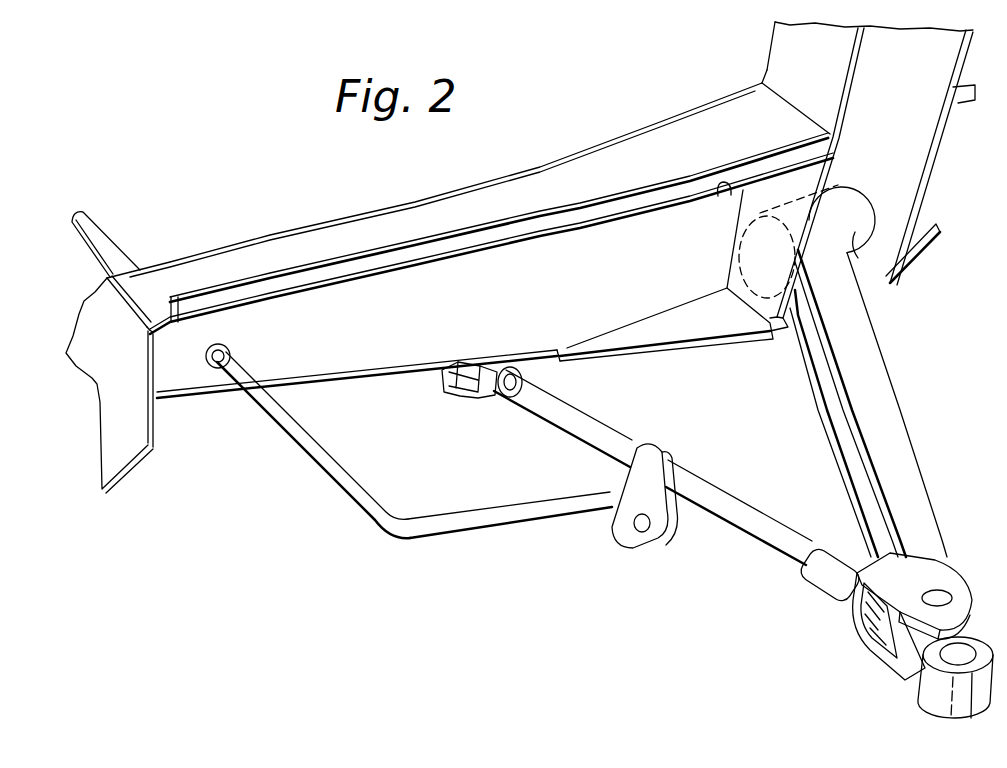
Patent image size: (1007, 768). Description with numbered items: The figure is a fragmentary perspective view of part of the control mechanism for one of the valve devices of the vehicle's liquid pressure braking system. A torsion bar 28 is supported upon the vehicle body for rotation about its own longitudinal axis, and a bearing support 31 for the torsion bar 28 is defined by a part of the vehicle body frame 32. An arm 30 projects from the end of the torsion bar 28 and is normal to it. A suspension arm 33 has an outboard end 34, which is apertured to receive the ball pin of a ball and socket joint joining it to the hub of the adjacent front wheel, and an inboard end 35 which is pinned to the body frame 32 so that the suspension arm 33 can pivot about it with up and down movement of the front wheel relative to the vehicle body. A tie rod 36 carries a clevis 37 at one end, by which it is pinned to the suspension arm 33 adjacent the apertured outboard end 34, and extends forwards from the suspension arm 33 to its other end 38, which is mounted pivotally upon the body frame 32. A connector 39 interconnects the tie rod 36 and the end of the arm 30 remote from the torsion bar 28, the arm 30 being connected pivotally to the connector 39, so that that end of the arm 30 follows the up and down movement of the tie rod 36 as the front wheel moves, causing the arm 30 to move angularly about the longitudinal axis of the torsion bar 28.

The torsion bar 28 is at (323, 463).
The arm 30 is at (483, 523).
The bearing support 31 is at (230, 352).
The vehicle body frame 32 is at (404, 348).
The suspension arm 33 is at (884, 400).
The outboard end 34 is at (935, 690).
The inboard end 35 is at (855, 209).
The tie rod 36 is at (588, 418).
The clevis 37 is at (943, 586).
The other end 38 is at (450, 382).
The connector 39 is at (657, 510).